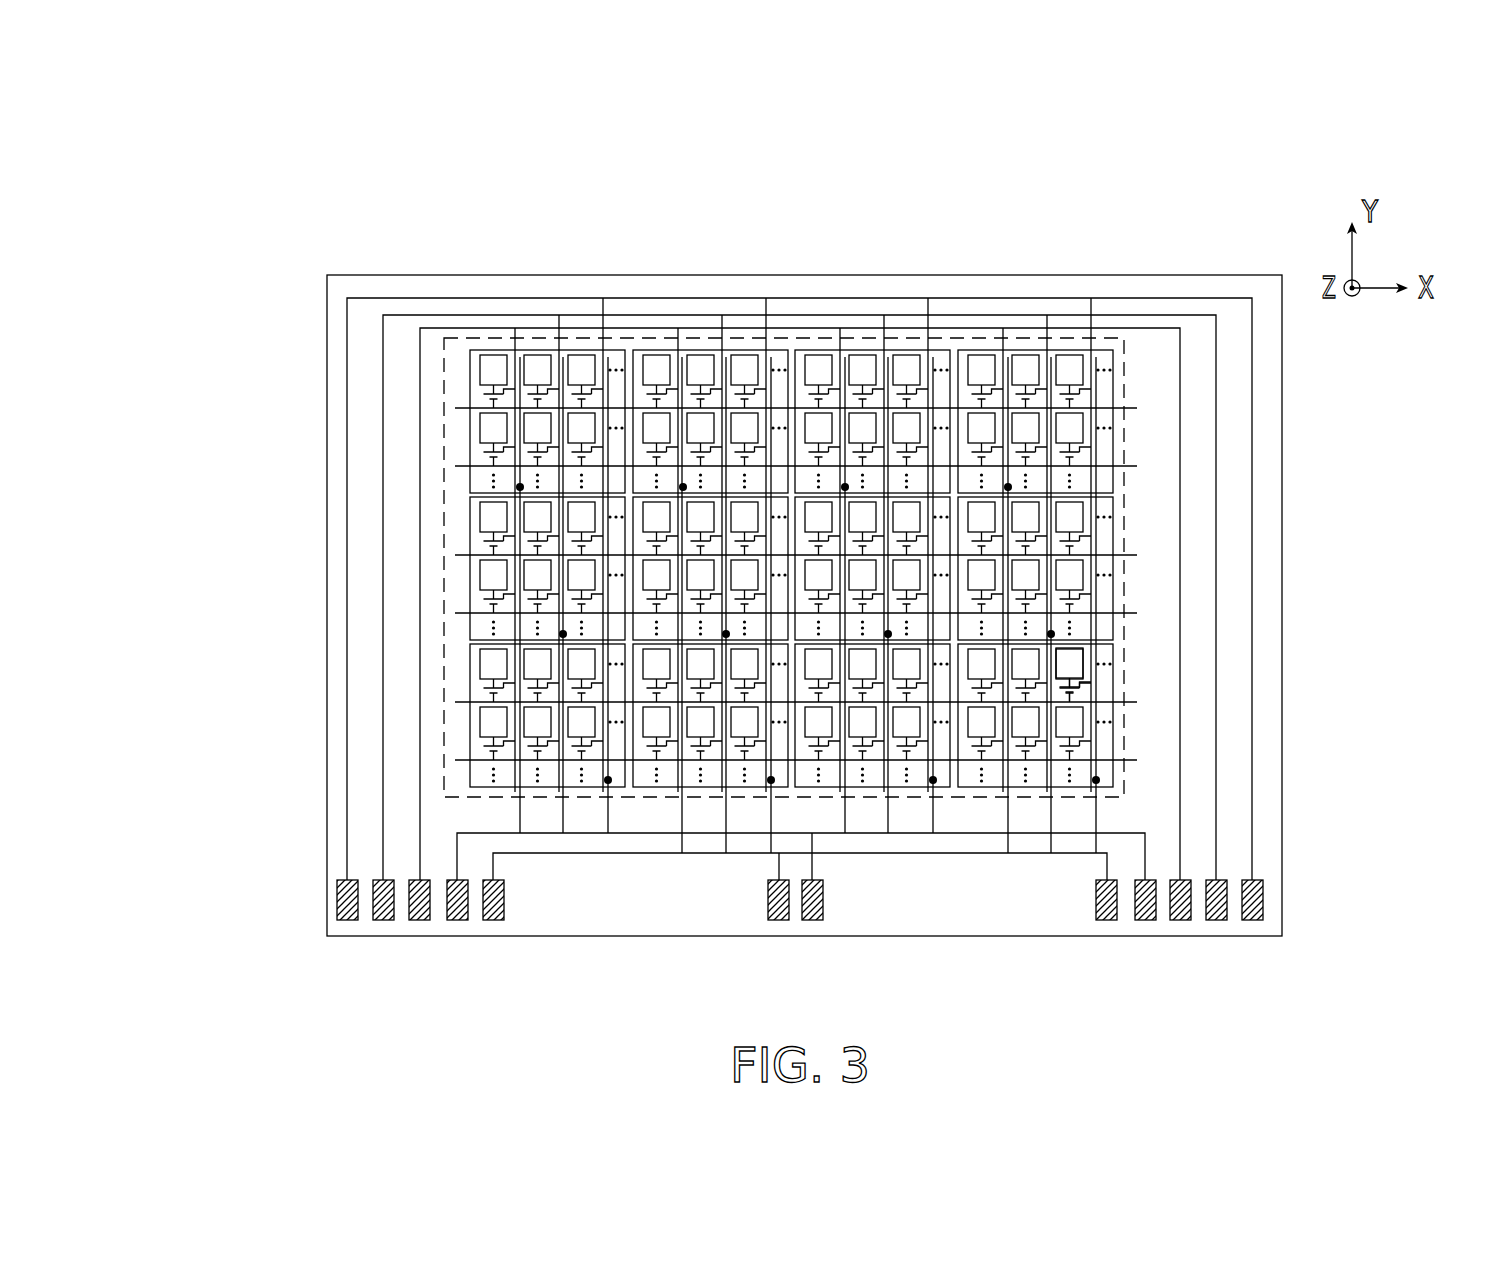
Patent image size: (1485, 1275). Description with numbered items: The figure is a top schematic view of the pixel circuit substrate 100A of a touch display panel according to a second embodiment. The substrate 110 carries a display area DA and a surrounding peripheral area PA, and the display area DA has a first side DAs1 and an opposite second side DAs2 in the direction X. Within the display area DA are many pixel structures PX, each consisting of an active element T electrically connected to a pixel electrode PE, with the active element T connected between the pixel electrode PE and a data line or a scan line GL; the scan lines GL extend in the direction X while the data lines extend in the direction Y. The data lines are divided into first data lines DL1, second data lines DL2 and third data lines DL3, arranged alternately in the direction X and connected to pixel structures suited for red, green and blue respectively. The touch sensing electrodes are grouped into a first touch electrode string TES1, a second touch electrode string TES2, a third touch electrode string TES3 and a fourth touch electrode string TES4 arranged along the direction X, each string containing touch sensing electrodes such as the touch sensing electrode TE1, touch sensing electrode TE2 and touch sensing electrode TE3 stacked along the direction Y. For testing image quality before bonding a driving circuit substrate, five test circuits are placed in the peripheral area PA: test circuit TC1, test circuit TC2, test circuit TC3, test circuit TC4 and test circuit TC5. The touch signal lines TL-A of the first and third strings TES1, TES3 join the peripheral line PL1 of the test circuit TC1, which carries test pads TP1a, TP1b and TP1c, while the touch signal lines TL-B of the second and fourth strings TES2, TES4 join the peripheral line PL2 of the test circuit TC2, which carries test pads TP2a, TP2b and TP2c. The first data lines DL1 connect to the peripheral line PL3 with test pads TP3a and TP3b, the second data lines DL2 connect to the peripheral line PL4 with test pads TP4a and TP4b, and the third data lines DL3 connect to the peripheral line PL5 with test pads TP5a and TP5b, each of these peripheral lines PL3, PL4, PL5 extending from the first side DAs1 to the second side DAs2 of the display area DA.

The substrate 110 is at (1283, 441).
The pixel circuit substrate 100A is at (1470, 1028).
The peripheral area PA is at (1268, 375).
The display area DA is at (1135, 337).
The first side of display area DAs1 is at (437, 378).
The second side of display area DAs2 is at (1150, 368).
The scan line GL is at (1137, 615).
The first touch electrode string TES1 is at (627, 250).
The second touch electrode string TES2 is at (790, 250).
The third touch electrode string TES3 is at (952, 250).
The fourth touch electrode string TES4 is at (1115, 250).
The touch signal line TL-A is at (608, 824).
The touch signal line TL-B is at (771, 852).
The first data line DL1 is at (845, 800).
The second data line DL2 is at (888, 800).
The third data line DL3 is at (933, 800).
The touch sensing electrode TE1 is at (470, 440).
The touch sensing electrode TE2 is at (470, 570).
The touch sensing electrode TE3 is at (470, 716).
The pixel electrode PE is at (1085, 665).
The active element T is at (1092, 693).
The pixel structure PX is at (1343, 643).
The peripheral line PL1 is at (633, 834).
The peripheral line PL2 is at (982, 854).
The peripheral line PL3 is at (420, 472).
The peripheral line PL4 is at (383, 635).
The peripheral line PL5 is at (347, 808).
The test pad TP1a is at (457, 920).
The test pad TP1b is at (1145, 920).
The test pad TP1c is at (812, 920).
The test pad TP2a is at (493, 920).
The test pad TP2b is at (1107, 920).
The test pad TP2c is at (779, 920).
The test pad TP3a is at (420, 920).
The test pad TP3b is at (1180, 920).
The test pad TP4a is at (383, 920).
The test pad TP4b is at (1216, 920).
The test pad TP5a is at (345, 920).
The test pad TP5b is at (1252, 920).
The test circuit TC1 is at (163, 279).
The test circuit TC2 is at (163, 432).
The test circuit TC3 is at (163, 581).
The test circuit TC4 is at (163, 729).
The test circuit TC5 is at (163, 879).